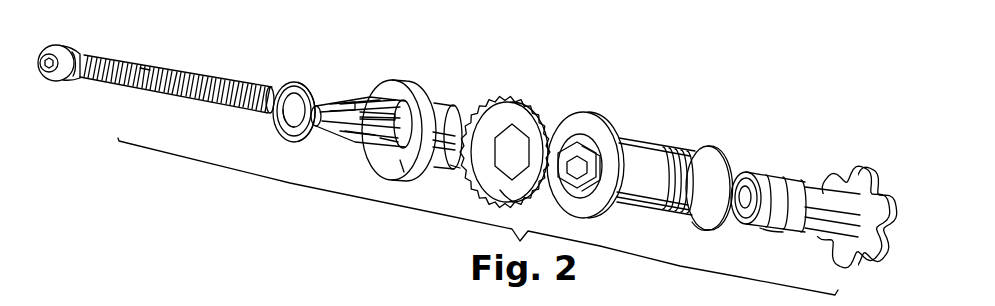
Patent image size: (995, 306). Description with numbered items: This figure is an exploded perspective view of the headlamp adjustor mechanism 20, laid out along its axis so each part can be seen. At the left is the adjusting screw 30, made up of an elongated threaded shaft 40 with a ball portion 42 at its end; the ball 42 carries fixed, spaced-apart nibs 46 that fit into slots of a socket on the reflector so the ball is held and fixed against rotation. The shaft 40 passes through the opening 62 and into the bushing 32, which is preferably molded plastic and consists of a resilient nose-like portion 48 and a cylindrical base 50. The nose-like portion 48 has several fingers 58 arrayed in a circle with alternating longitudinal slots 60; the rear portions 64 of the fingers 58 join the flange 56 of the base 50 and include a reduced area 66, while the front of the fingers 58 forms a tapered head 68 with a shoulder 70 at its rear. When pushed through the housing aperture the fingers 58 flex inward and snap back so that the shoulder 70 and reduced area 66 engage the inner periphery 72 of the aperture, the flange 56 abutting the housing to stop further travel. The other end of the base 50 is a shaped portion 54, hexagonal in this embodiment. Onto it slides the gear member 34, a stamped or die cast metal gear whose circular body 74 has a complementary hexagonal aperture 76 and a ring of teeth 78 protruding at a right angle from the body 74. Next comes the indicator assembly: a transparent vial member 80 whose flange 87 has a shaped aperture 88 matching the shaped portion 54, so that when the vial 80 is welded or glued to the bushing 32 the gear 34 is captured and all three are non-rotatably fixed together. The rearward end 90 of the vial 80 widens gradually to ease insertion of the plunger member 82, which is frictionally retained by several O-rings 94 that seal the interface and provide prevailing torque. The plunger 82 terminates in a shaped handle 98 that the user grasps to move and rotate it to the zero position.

The adjustor mechanism 20 is at (724, 99).
The adjusting screw 30 is at (148, 103).
The bushing 32 is at (388, 80).
The gear member 34 is at (490, 92).
The threaded shaft 40 is at (160, 68).
The ball portion 42 is at (62, 50).
The nibs 46 is at (56, 82).
The nose-like portion 48 is at (316, 153).
The base 50 is at (438, 110).
The shaped portion 54 is at (456, 169).
The flange 56 is at (405, 145).
The fingers 58 is at (347, 100).
The longitudinal slots 60 is at (330, 100).
The opening 62 is at (282, 90).
The rear portions of the fingers 64 is at (408, 173).
The reduced area 66 is at (378, 136).
The tapered head 68 is at (300, 136).
The shoulder 70 is at (365, 100).
The inner periphery 72 is at (712, 147).
The circular body 74 is at (516, 108).
The aperture 76 is at (500, 192).
The teeth 78 is at (535, 125).
The vial member 80 is at (637, 150).
The plunger member 82 is at (802, 181).
The flange 87 is at (596, 198).
The shaped aperture 88 is at (577, 190).
The rearward end of the vial 90 is at (697, 227).
The O-rings 94 is at (783, 227).
The shaped handle 98 is at (852, 168).